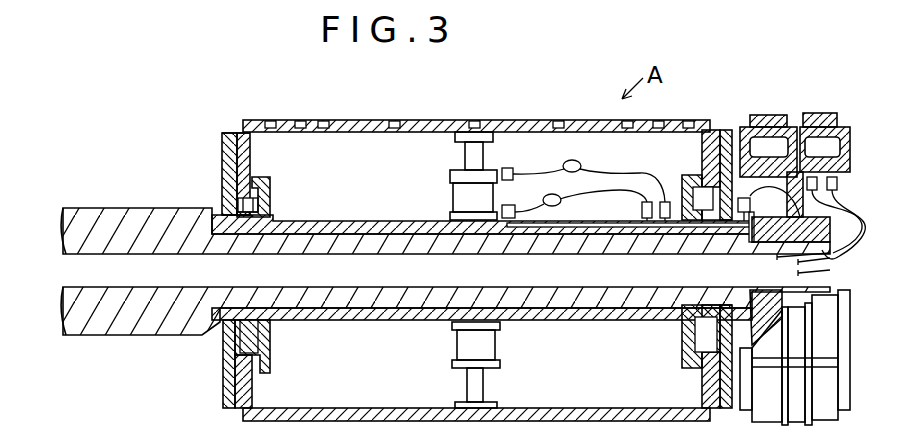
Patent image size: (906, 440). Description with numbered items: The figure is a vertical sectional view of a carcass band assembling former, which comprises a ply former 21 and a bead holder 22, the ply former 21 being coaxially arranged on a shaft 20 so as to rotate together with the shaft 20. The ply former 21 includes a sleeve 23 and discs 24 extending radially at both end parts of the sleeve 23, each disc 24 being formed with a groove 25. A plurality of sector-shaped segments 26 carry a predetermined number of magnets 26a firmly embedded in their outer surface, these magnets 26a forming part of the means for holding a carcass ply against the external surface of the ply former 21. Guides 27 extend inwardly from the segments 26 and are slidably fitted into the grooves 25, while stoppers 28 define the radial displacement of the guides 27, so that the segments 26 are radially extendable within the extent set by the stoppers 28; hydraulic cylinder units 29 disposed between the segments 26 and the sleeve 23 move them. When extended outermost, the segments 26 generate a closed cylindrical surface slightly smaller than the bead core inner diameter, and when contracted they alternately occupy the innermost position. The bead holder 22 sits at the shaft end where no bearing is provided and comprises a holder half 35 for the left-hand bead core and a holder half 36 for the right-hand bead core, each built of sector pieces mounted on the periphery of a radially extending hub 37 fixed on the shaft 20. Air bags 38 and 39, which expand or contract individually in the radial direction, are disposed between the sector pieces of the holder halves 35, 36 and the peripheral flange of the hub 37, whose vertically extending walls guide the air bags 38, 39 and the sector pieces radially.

The shaft 20 is at (147, 207).
The ply former 21 is at (418, 108).
The bead holder 22 is at (826, 98).
The sleeve 23 is at (360, 221).
The discs 24 is at (222, 154).
The groove 25 is at (237, 205).
The sector-shaped segments 26 is at (345, 121).
The magnets 26a is at (473, 121).
The guides 27 is at (253, 163).
The stoppers 28 is at (273, 213).
The hydraulic cylinder units 29 is at (450, 175).
The holder half 35 is at (764, 127).
The holder half 36 is at (833, 122).
The hub 37 is at (830, 254).
The air bag 38 is at (760, 137).
The air bag 39 is at (853, 147).